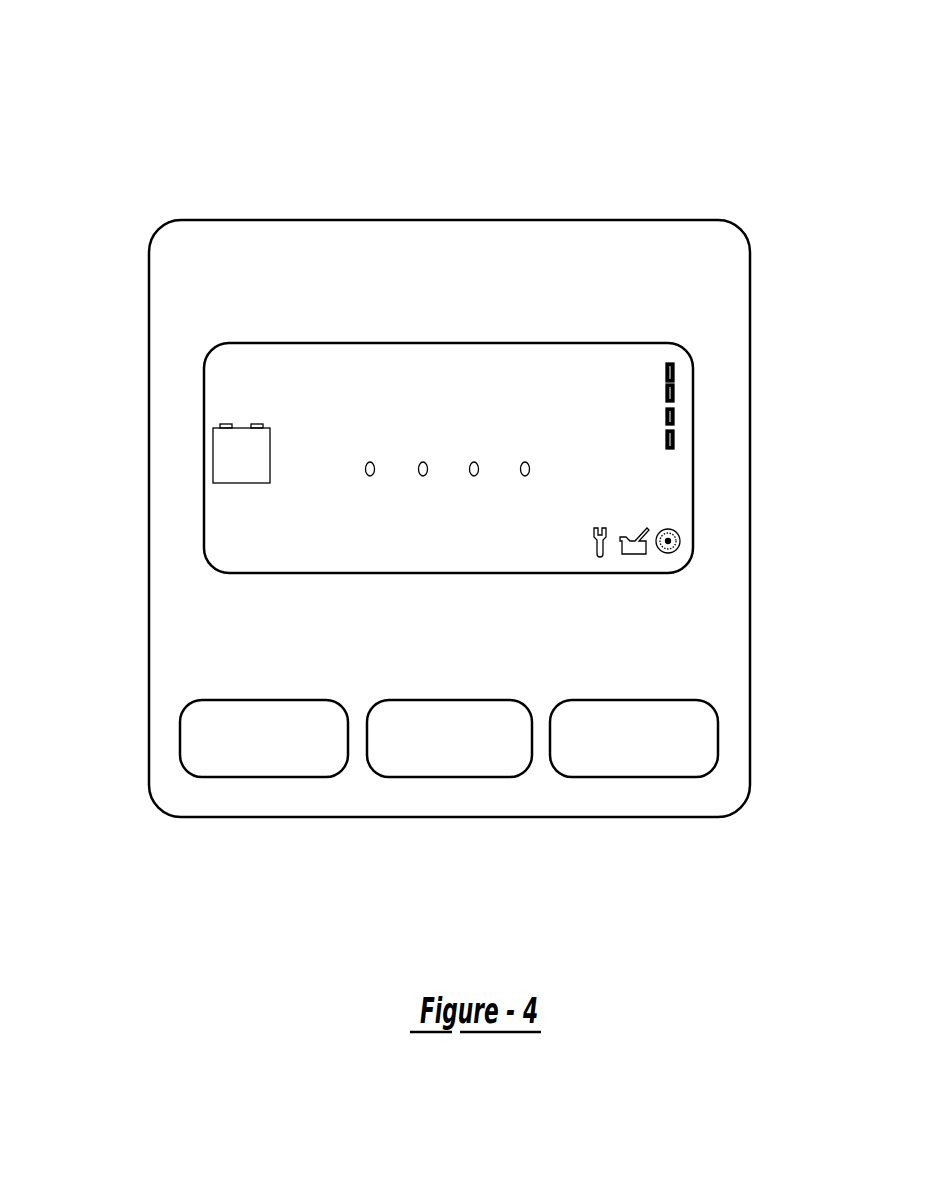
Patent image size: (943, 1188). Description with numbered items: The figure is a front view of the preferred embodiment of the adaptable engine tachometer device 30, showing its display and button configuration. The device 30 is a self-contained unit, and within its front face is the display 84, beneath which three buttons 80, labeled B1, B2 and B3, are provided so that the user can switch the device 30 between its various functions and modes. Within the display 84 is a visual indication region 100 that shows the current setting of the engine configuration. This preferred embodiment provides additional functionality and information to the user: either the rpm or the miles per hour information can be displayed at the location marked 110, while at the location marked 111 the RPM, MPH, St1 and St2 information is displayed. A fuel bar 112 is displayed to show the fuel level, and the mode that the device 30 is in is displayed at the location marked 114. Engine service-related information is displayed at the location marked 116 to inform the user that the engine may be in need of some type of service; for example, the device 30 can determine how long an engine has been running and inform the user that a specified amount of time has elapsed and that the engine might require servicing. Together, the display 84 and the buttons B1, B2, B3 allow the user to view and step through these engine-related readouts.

The adaptable engine tachometer device 30 is at (136, 160).
The buttons 80 is at (802, 594).
The display 84 is at (444, 338).
The visual indication region 100 is at (228, 368).
The rpm or mph display 110 is at (524, 358).
The RPM, MPH, St1, St2 information display 111 is at (203, 547).
The fuel bar 112 is at (677, 393).
The mode display 114 is at (654, 485).
The engine service-related information display 116 is at (473, 570).
The first button B1 is at (280, 782).
The second button B2 is at (463, 782).
The third button B3 is at (647, 782).